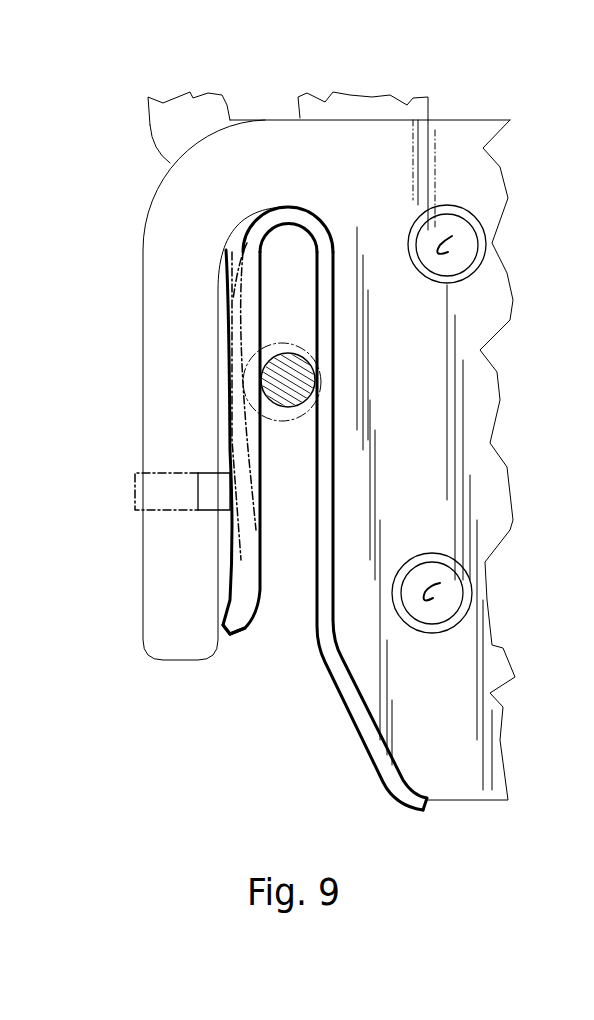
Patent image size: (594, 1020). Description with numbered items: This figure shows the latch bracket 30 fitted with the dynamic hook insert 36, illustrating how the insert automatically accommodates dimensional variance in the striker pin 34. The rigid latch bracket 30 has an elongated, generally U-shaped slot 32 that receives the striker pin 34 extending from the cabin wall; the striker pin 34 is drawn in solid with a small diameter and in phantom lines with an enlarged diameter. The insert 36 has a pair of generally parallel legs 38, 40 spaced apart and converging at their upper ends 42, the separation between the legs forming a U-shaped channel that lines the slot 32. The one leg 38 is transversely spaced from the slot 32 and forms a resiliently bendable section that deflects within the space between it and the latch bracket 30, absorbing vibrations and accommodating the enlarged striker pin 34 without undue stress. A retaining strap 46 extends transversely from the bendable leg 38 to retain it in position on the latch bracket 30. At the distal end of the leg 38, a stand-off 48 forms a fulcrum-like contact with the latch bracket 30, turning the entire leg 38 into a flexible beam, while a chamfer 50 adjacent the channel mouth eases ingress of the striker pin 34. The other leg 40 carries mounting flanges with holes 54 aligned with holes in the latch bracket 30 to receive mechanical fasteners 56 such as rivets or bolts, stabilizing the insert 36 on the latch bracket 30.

The latch bracket 30 is at (440, 143).
The slot 32 is at (220, 307).
The striker pin 34 is at (290, 355).
The dynamic hook insert 36 is at (342, 724).
The resiliently bendable leg 38 is at (262, 490).
The other leg 40 is at (317, 423).
The upper ends 42 is at (288, 220).
The retaining strap 46 is at (135, 475).
The stand-off 48 is at (228, 614).
The chamfer 50 is at (245, 608).
The holes 54 is at (453, 218).
The mechanical fasteners 56 is at (448, 252).